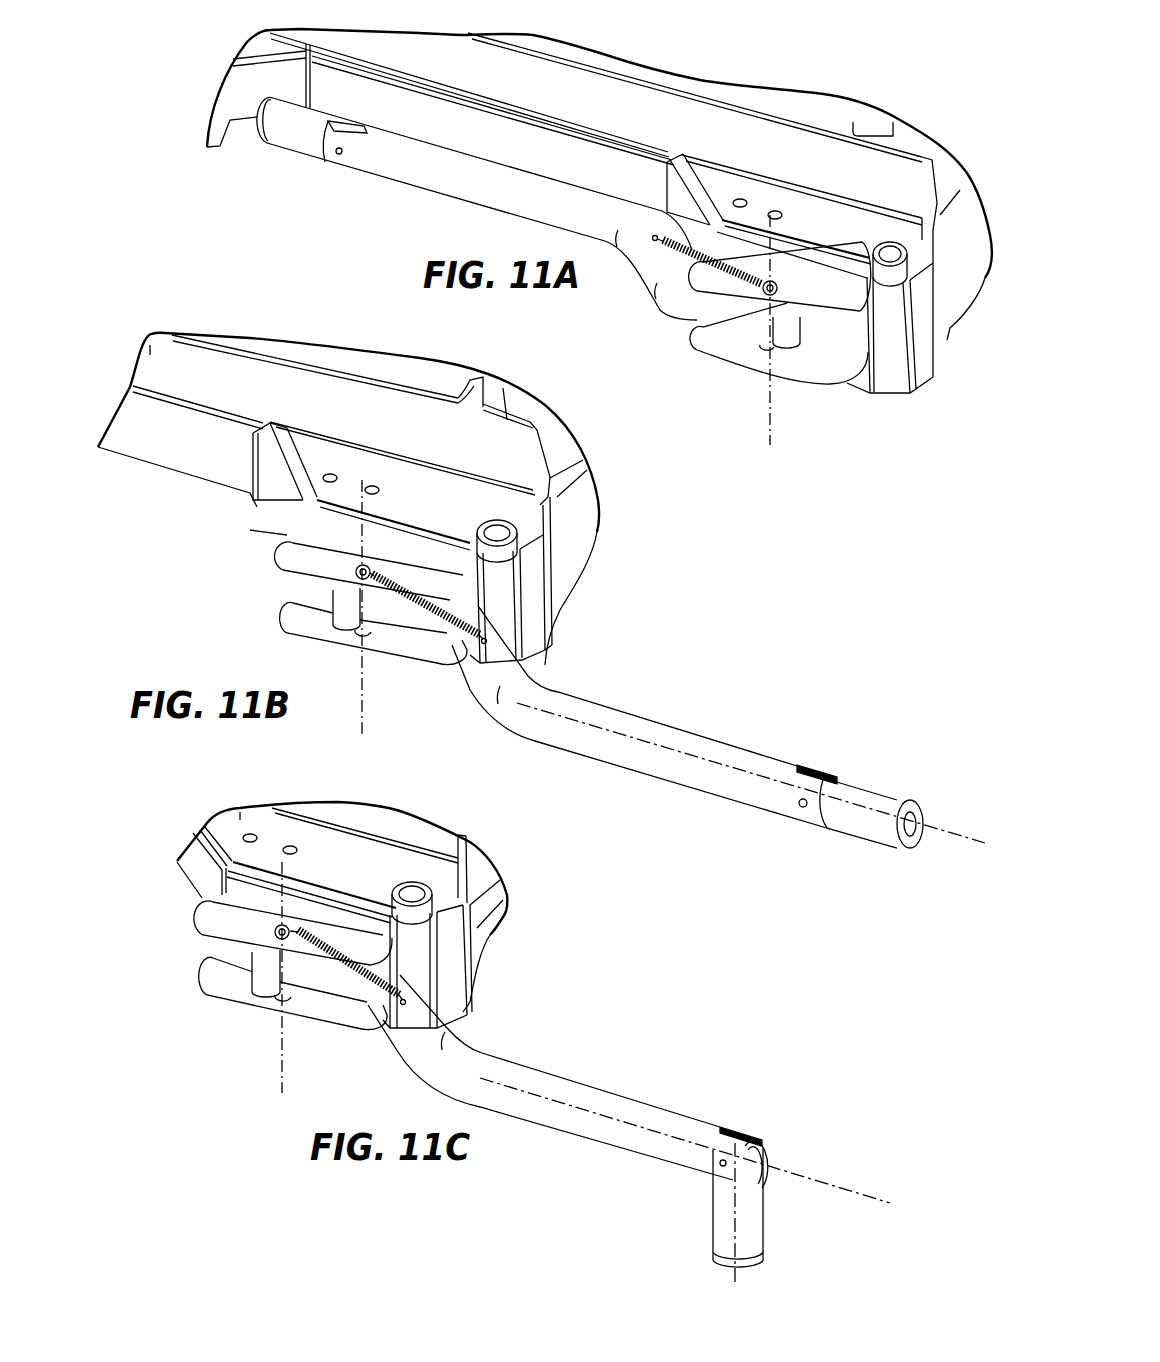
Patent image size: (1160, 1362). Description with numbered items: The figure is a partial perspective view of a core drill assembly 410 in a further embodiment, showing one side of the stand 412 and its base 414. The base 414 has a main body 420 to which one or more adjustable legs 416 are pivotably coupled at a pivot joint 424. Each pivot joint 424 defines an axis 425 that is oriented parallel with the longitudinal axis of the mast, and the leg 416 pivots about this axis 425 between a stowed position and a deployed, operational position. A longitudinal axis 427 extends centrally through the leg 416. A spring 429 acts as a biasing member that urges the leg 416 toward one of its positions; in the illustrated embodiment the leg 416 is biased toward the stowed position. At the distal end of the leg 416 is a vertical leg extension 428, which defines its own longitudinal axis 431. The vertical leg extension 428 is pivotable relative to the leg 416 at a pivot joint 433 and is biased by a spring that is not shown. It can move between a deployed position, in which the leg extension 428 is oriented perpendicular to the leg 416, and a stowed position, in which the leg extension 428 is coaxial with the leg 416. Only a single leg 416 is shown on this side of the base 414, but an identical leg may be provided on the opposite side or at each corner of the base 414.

In FIG. 11A, the core drill assembly 410 is at (830, 405).
In FIG. 11B, the core drill assembly 410 is at (243, 581).
In FIG. 11C, the core drill assembly 410 is at (178, 947).
In FIG. 11A, the stand 412 is at (872, 92).
In FIG. 11B, the stand 412 is at (305, 342).
In FIG. 11C, the stand 412 is at (528, 862).
In FIG. 11A, the base 414 is at (677, 113).
In FIG. 11B, the base 414 is at (493, 464).
In FIG. 11C, the base 414 is at (392, 871).
In FIG. 11A, the adjustable leg 416 is at (416, 178).
In FIG. 11B, the adjustable leg 416 is at (707, 748).
In FIG. 11C, the adjustable leg 416 is at (652, 1122).
In FIG. 11A, the main body 420 is at (563, 157).
In FIG. 11B, the main body 420 is at (228, 392).
In FIG. 11C, the main body 420 is at (237, 825).
In FIG. 11A, the pivot joint 424 is at (777, 282).
In FIG. 11B, the pivot joint 424 is at (287, 542).
In FIG. 11C, the pivot joint 424 is at (208, 899).
In FIG. 11A, the axis 425 is at (769, 410).
In FIG. 11B, the axis 425 is at (361, 700).
In FIG. 11C, the axis 425 is at (281, 1063).
In FIG. 11B, the longitudinal axis 427 is at (609, 731).
In FIG. 11C, the longitudinal axis 427 is at (545, 1099).
In FIG. 11A, the vertical leg extension 428 is at (287, 148).
In FIG. 11B, the vertical leg extension 428 is at (870, 794).
In FIG. 11C, the vertical leg extension 428 is at (755, 1228).
In FIG. 11A, the spring 429 is at (743, 245).
In FIG. 11B, the spring 429 is at (432, 574).
In FIG. 11C, the spring 429 is at (302, 933).
In FIG. 11B, the longitudinal axis 431 is at (951, 830).
In FIG. 11C, the longitudinal axis 431 is at (740, 1282).
In FIG. 11A, the pivot joint 433 is at (338, 158).
In FIG. 11B, the pivot joint 433 is at (804, 808).
In FIG. 11C, the pivot joint 433 is at (721, 1167).